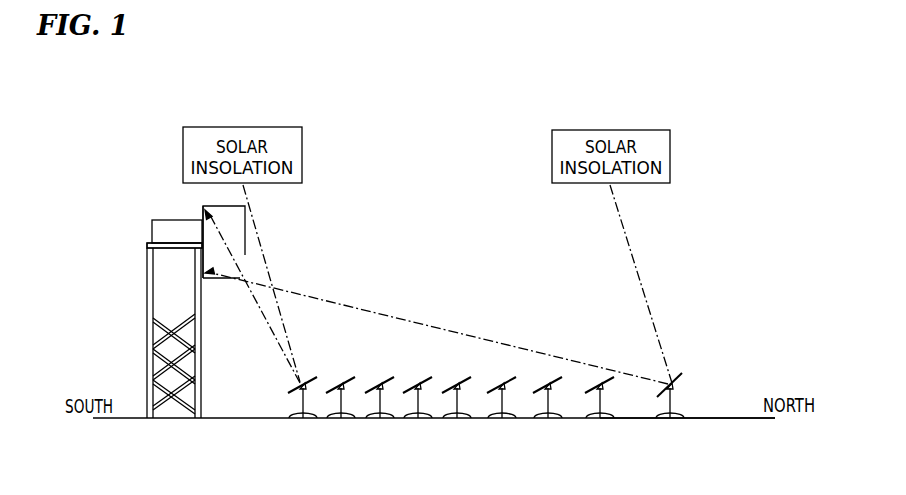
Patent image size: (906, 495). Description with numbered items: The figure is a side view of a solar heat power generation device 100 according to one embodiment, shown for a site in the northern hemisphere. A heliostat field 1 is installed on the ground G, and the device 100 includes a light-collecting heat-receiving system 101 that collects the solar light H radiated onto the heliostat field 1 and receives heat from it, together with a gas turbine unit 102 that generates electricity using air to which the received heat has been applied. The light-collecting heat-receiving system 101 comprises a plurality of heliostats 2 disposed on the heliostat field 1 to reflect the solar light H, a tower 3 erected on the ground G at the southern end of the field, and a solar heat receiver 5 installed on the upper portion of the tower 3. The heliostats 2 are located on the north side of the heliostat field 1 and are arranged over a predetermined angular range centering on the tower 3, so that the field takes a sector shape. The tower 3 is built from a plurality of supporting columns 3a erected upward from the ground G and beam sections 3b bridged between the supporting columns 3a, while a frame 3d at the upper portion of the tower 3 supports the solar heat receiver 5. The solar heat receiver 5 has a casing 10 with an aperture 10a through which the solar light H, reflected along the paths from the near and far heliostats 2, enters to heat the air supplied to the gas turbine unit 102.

The solar heat power generation device 100 is at (112, 203).
The light-collecting heat-receiving system 101 is at (146, 241).
The gas turbine unit 102 is at (165, 217).
The casing 10 is at (199, 203).
The aperture 10a is at (245, 255).
The solar heat receiver 5 is at (268, 224).
The tower 3 is at (161, 360).
The supporting columns 3a is at (150, 403).
The beam sections 3b is at (185, 400).
The frame 3d is at (173, 249).
The heliostats 2 is at (600, 402).
The heliostat field 1 is at (697, 421).
The ground G is at (732, 421).
The solar light H is at (258, 312).